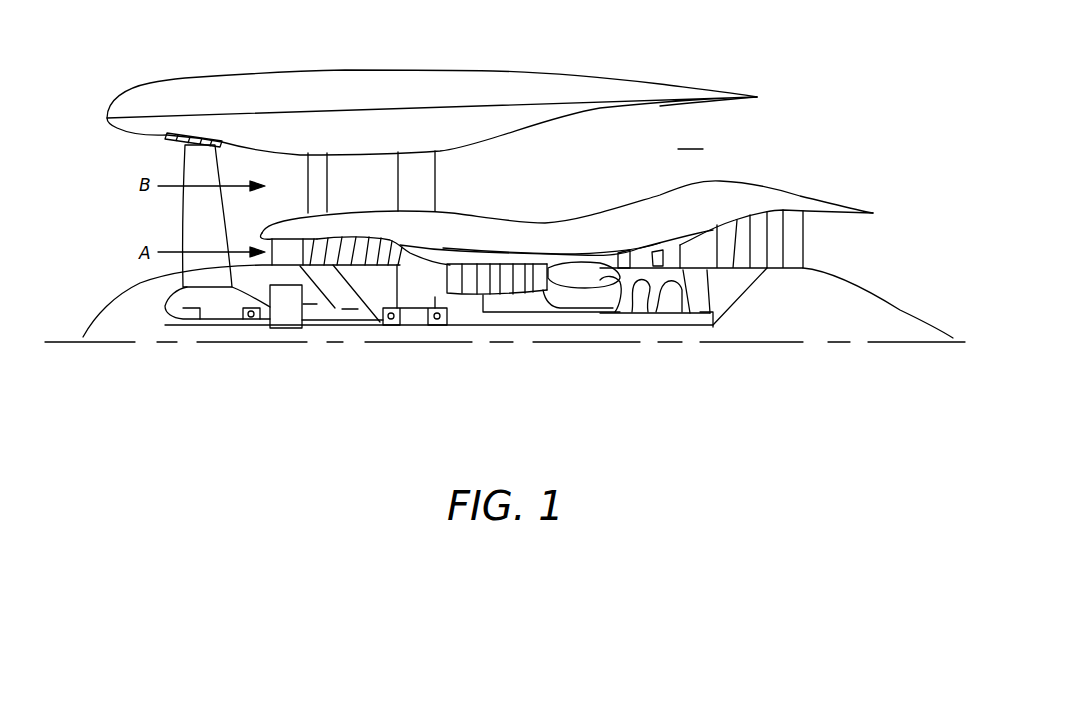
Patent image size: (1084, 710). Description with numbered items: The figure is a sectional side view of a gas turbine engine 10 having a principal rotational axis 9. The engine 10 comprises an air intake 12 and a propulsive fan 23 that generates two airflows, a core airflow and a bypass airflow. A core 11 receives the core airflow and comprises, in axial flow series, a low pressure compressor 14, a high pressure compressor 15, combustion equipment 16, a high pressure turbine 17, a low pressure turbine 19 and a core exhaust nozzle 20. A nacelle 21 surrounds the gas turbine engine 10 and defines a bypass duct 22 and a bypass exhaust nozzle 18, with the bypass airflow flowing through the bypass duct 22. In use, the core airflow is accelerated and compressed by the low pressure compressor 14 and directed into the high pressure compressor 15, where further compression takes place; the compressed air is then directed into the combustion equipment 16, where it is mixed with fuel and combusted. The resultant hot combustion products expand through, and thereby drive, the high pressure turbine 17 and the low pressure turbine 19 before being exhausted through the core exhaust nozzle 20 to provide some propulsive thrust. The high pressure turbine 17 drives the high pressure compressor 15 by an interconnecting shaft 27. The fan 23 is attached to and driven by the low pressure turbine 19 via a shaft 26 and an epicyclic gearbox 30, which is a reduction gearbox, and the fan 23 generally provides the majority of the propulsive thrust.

The principal rotational axis 9 is at (755, 342).
The gas turbine engine 10 is at (424, 78).
The core 11 is at (545, 235).
The air intake 12 is at (126, 163).
The low pressure compressor 14 is at (356, 243).
The high pressure compressor 15 is at (503, 277).
The combustion equipment 16 is at (578, 278).
The high pressure turbine 17 is at (642, 262).
The bypass exhaust nozzle 18 is at (762, 136).
The low pressure turbine 19 is at (776, 231).
The core exhaust nozzle 20 is at (845, 241).
The nacelle 21 is at (415, 84).
The bypass duct 22 is at (478, 233).
The propulsive fan 23 is at (187, 219).
The shaft 26 is at (495, 327).
The interconnecting shaft 27 is at (537, 313).
The epicyclic gearbox 30 is at (285, 328).